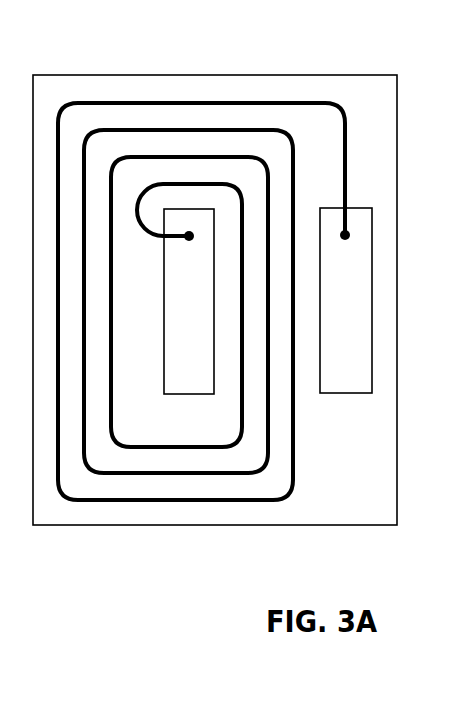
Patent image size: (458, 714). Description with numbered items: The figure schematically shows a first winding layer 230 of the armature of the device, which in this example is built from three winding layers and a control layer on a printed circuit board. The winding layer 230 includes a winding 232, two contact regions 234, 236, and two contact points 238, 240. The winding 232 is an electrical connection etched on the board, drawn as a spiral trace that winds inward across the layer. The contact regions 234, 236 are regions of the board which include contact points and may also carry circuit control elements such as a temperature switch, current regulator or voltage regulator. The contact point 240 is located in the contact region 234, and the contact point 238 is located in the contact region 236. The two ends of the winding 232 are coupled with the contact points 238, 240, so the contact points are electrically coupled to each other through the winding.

The winding layer 230 is at (322, 75).
The winding 232 is at (190, 102).
The contact region 234 is at (345, 393).
The contact region 236 is at (177, 395).
The contact point 238 is at (189, 239).
The contact point 240 is at (347, 237).